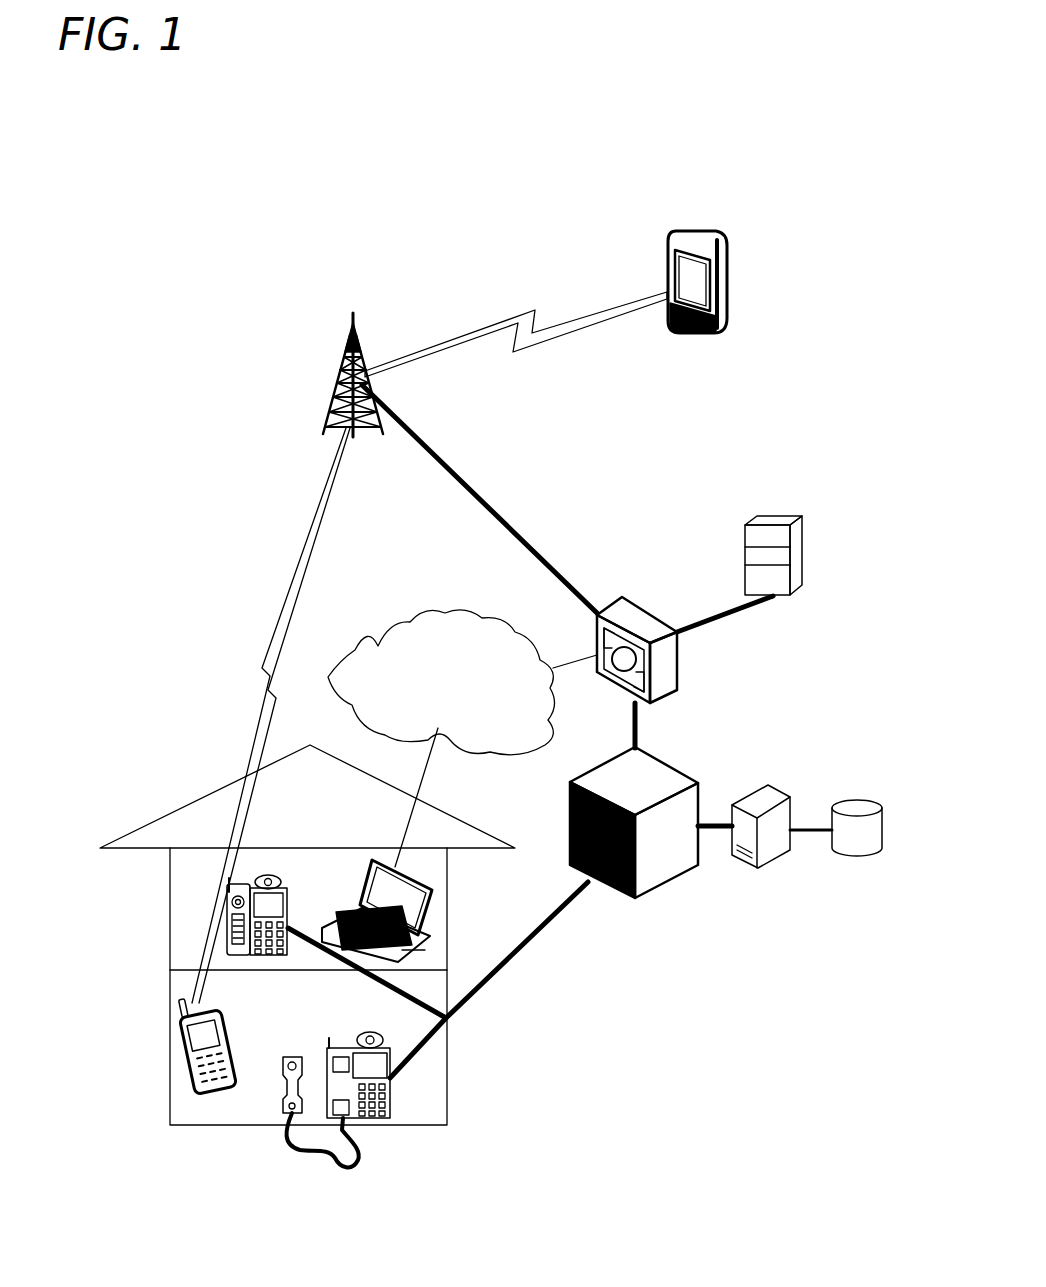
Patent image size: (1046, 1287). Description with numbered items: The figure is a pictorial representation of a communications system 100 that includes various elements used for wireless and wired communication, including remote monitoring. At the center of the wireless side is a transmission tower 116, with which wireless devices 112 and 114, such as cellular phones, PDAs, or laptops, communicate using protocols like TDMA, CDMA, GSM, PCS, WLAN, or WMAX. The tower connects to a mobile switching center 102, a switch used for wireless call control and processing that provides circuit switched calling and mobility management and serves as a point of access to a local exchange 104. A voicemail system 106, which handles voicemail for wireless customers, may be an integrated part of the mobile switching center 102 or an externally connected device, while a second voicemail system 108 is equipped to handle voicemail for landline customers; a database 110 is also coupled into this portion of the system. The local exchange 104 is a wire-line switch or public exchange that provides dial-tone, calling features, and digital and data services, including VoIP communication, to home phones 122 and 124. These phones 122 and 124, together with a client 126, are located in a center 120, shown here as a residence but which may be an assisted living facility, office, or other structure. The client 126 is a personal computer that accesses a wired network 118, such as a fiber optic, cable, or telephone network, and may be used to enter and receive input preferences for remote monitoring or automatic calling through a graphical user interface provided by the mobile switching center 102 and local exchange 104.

The communications system 100 is at (173, 236).
The mobile switching center 102 is at (623, 597).
The local exchange 104 is at (637, 900).
The voicemail system 106 is at (778, 545).
The voicemail system 108 is at (782, 855).
The database 110 is at (842, 812).
The wireless device 112 is at (722, 252).
The wireless device 114 is at (190, 1078).
The transmission tower 116 is at (340, 408).
The wired network 118 is at (426, 707).
The center 120 is at (166, 800).
The phone 122 is at (392, 1112).
The phone 124 is at (224, 935).
The client 126 is at (437, 927).